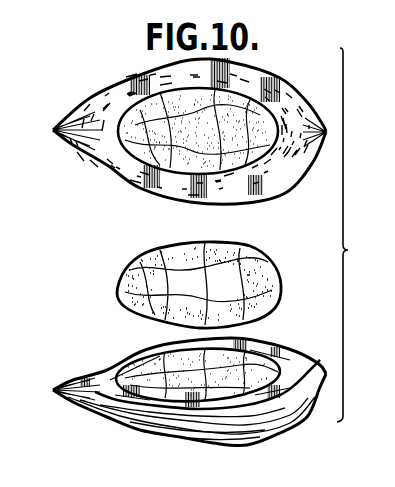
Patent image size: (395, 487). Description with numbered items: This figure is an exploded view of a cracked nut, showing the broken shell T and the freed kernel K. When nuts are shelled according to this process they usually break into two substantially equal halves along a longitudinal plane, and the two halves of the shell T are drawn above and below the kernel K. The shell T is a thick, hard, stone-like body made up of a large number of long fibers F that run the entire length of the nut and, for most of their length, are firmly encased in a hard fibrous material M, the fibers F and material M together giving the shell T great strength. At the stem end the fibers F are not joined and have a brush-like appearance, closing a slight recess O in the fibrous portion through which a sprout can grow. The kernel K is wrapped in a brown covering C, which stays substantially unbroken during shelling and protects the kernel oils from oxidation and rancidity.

The shell T is at (295, 90).
The fibers F is at (72, 125).
The recess O is at (112, 133).
The fibrous material M is at (123, 98).
The kernel K is at (138, 268).
The covering C is at (282, 298).